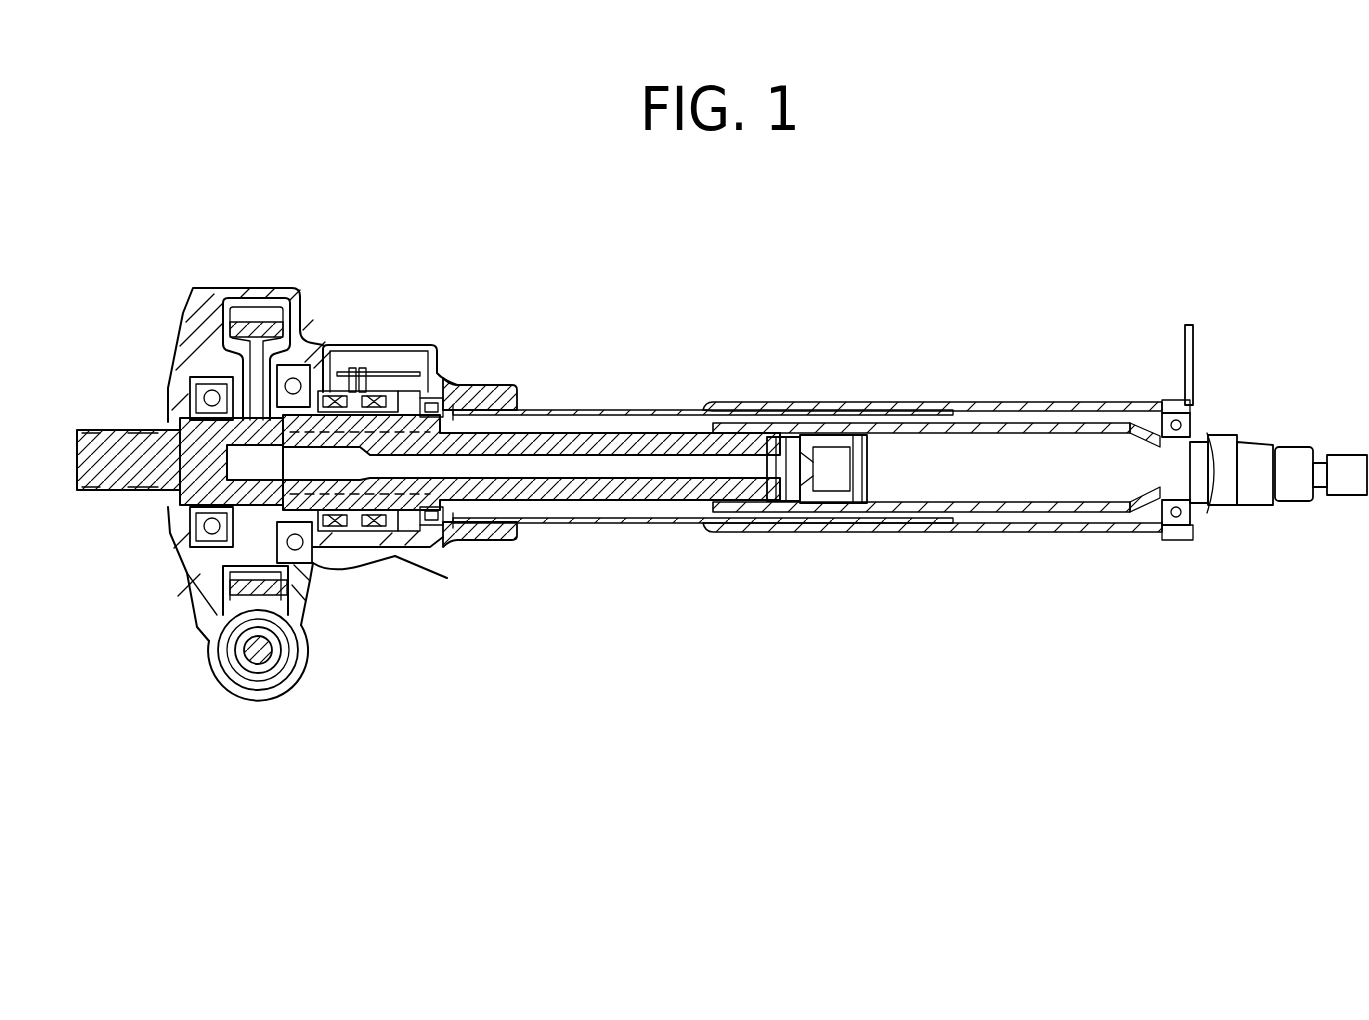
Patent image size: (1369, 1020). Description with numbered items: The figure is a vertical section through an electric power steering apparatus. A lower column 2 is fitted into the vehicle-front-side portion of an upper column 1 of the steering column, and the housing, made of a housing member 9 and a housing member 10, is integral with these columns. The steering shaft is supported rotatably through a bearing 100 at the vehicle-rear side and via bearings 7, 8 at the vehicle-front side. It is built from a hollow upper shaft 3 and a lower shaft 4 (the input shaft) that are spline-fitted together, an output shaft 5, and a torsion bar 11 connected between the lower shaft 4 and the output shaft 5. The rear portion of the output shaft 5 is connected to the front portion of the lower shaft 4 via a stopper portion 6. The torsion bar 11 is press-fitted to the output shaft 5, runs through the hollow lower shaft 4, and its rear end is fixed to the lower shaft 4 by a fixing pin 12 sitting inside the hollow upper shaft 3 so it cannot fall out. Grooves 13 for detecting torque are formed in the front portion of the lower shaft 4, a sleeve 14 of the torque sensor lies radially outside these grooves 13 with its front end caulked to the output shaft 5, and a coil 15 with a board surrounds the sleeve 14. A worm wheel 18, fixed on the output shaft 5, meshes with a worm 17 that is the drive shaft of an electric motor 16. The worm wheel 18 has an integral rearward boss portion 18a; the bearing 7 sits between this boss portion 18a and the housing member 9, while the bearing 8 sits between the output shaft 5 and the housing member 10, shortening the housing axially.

The upper column 1 is at (1000, 400).
The lower column 2 is at (667, 410).
The upper shaft 3 is at (1023, 535).
The lower shaft 4 is at (720, 503).
The output shaft 5 is at (93, 492).
The stopper portion 6 is at (345, 547).
The bearing 7 is at (316, 347).
The bearing 8 is at (195, 376).
The housing member 9 is at (235, 287).
The housing member 10 is at (184, 313).
The torsion bar 11 is at (595, 460).
The fixing pin 12 is at (788, 490).
The grooves 13 is at (430, 533).
The sleeve 14 is at (353, 548).
The coil 15 is at (400, 548).
The electric motor 16 is at (265, 676).
The worm 17 is at (242, 647).
The worm wheel 18 is at (265, 551).
The boss portion 18a is at (347, 345).
The bearing 100 is at (1192, 410).